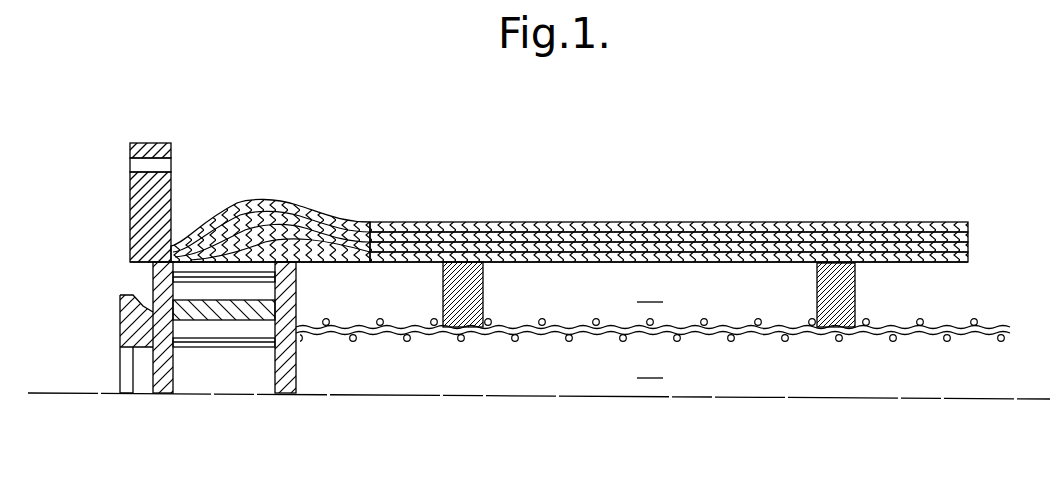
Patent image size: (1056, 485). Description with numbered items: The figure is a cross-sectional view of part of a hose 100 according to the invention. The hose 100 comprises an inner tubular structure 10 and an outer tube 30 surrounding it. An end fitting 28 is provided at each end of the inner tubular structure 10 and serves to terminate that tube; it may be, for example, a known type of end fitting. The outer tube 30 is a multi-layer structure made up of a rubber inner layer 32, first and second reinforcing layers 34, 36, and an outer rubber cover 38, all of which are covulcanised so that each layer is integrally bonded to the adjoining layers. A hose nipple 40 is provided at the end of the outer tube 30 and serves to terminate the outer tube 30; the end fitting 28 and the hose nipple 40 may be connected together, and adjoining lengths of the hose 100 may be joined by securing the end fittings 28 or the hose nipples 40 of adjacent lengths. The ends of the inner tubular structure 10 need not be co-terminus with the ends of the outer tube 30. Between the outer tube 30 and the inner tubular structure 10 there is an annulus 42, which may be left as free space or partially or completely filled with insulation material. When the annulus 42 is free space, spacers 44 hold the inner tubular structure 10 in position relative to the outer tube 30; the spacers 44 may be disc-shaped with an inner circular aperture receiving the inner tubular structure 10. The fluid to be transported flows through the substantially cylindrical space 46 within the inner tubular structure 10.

The hose 100 is at (482, 163).
The inner tubular structure 10 is at (807, 342).
The end fitting 28 is at (165, 366).
The outer tube 30 is at (702, 216).
The rubber inner layer 32 is at (935, 267).
The first reinforcing layer 34 is at (960, 248).
The second reinforcing layer 36 is at (945, 222).
The outer rubber cover 38 is at (867, 222).
The hose nipple 40 is at (171, 186).
The annulus 42 is at (650, 292).
The spacer 44 is at (443, 297).
The substantially cylindrical space 46 is at (650, 368).